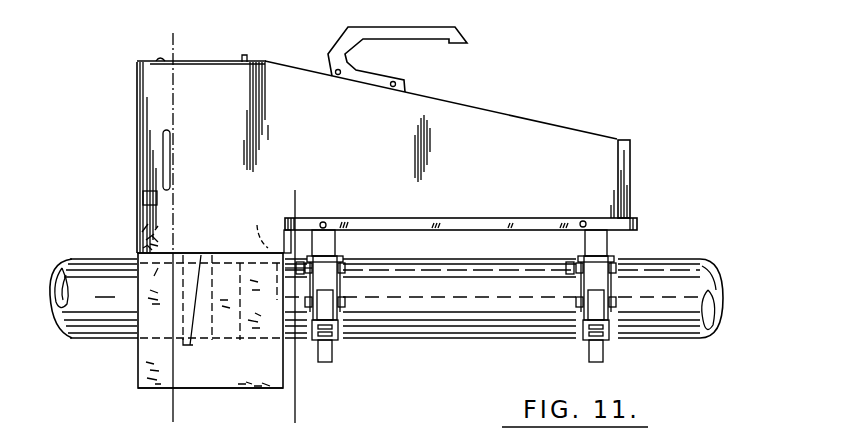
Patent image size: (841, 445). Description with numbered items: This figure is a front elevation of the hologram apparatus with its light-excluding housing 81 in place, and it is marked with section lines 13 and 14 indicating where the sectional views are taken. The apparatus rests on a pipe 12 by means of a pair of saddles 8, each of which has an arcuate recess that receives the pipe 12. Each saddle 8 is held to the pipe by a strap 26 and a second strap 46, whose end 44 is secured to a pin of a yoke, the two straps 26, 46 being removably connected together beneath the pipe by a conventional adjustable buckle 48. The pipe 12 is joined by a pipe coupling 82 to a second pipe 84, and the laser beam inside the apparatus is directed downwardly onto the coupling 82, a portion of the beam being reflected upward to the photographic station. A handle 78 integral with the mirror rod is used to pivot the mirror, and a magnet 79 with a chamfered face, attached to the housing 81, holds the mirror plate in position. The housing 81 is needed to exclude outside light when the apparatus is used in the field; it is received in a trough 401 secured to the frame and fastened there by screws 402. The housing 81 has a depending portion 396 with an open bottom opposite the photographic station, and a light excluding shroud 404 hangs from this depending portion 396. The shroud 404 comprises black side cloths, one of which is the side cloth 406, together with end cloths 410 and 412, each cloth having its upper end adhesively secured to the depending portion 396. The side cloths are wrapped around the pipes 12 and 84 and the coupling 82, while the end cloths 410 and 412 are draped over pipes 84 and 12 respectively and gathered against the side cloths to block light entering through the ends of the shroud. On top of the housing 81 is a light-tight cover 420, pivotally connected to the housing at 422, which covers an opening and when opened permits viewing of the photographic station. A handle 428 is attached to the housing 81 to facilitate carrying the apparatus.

The section line 13- 13 is at (173, 33).
The section line 14- 14 is at (295, 190).
The saddle 8 is at (330, 240).
The pipe 12 is at (468, 328).
The strap 26 is at (335, 352).
The end of second strap 44 is at (330, 302).
The second strap 46 is at (600, 302).
The adjustable buckle 48 is at (316, 343).
The handle 78 is at (165, 157).
The magnet 79 is at (143, 200).
The housing 81 is at (388, 167).
The pipe coupling 82 is at (226, 352).
The pipe 84 is at (112, 317).
The depending portion 396 is at (200, 317).
The trough 401 is at (427, 227).
The screws 402 is at (324, 221).
The light excluding shroud 404 is at (133, 358).
The side cloth 406 is at (225, 380).
The end cloth 410 is at (172, 232).
The end cloth 412 is at (263, 227).
The light-tight cover 420 is at (208, 59).
The pivot connection 422 is at (158, 59).
The handle 428 is at (430, 40).